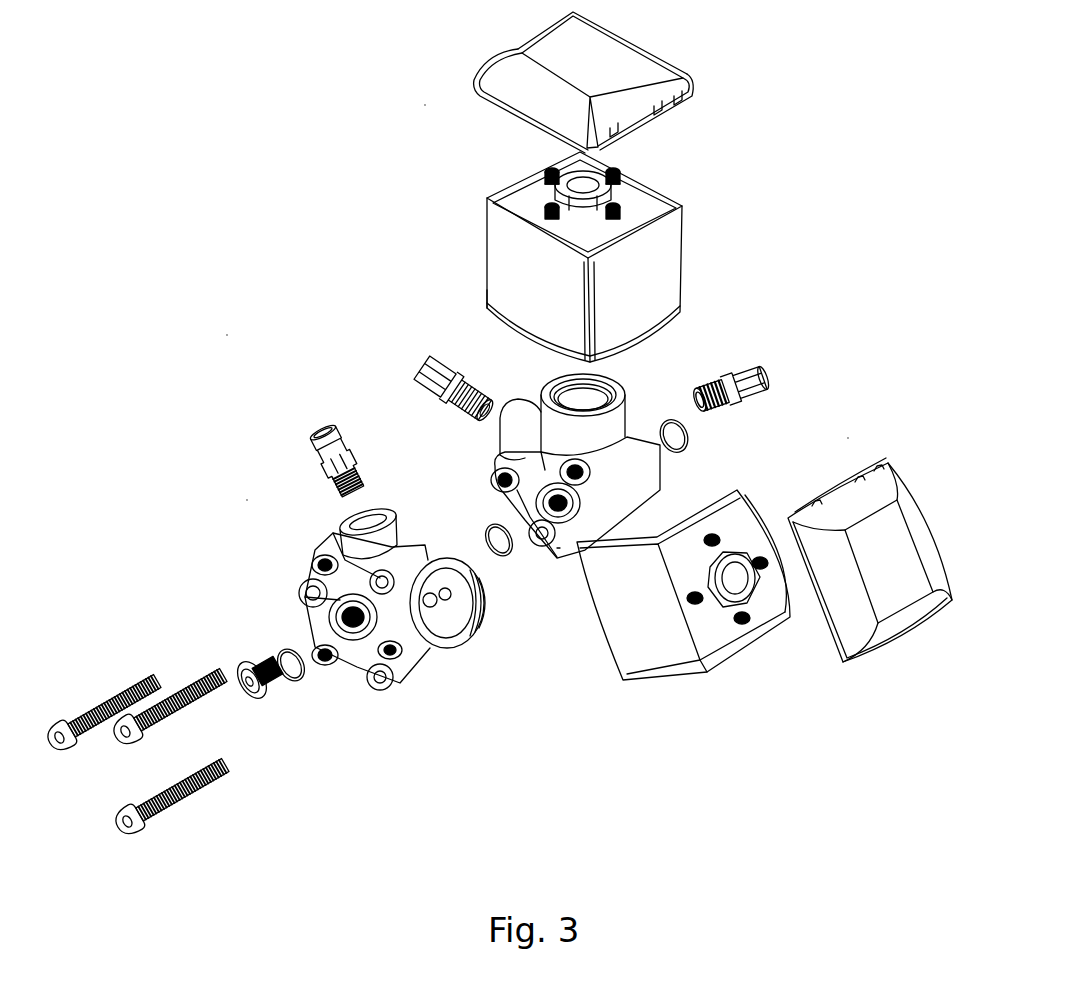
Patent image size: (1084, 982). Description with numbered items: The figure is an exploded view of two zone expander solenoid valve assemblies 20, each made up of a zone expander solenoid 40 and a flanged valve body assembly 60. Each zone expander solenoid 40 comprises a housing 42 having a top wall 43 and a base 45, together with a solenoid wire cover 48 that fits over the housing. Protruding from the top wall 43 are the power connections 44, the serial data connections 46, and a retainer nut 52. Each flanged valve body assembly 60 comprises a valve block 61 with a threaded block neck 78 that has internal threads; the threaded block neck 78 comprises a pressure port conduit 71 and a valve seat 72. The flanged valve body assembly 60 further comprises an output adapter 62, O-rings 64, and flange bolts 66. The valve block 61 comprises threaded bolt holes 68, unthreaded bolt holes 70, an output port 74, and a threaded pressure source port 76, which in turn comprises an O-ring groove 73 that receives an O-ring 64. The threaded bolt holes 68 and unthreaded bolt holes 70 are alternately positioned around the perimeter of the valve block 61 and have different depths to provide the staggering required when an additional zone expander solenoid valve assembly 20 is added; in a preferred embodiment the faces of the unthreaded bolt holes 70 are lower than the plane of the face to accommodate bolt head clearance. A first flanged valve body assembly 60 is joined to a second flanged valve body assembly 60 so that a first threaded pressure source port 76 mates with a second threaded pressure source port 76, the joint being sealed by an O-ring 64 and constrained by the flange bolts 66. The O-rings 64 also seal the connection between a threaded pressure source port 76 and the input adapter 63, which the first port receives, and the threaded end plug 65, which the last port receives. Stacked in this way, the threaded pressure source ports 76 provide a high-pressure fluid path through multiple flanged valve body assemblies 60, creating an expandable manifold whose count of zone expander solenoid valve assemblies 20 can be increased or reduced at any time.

The zone expander solenoid valve assembly 20 is at (227, 335).
The zone expander solenoid 40 is at (425, 105).
The housing 42 is at (652, 275).
The top wall 43 is at (652, 213).
The power connections 44 is at (617, 195).
The base 45 is at (490, 325).
The serial data connections 46 is at (560, 208).
The solenoid wire cover 48 is at (605, 68).
The retainer nut 52 is at (612, 163).
The flanged valve body assembly 60 is at (247, 500).
The valve block 61 is at (618, 483).
The output adapter 62 is at (343, 445).
The input adapter 63 is at (752, 392).
The O-rings 64 is at (700, 448).
The threaded end plug 65 is at (258, 695).
The flange bolts 66 is at (125, 812).
The threaded bolt holes 68 is at (322, 563).
The unthreaded bolt holes 70 is at (397, 557).
The pressure port conduit 71 is at (432, 603).
The valve seat 72 is at (443, 630).
The O-ring groove 73 is at (627, 480).
The output port 74 is at (510, 430).
The threaded pressure source port 76 is at (337, 620).
The threaded block neck 78 is at (623, 420).